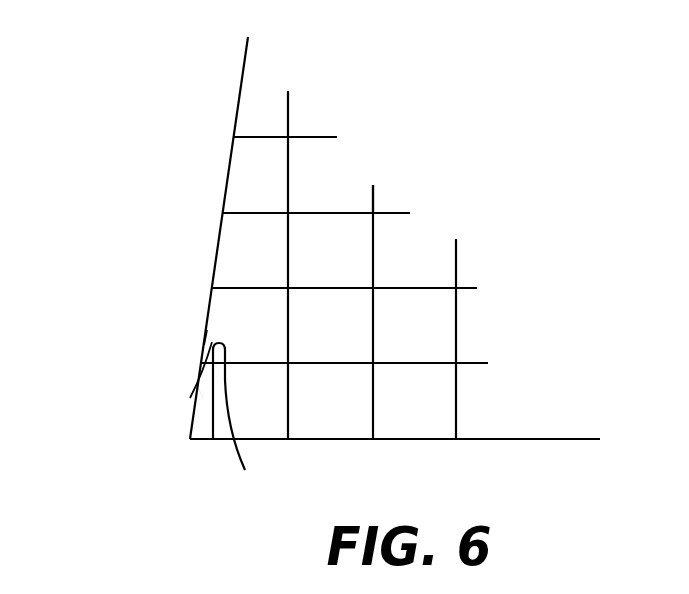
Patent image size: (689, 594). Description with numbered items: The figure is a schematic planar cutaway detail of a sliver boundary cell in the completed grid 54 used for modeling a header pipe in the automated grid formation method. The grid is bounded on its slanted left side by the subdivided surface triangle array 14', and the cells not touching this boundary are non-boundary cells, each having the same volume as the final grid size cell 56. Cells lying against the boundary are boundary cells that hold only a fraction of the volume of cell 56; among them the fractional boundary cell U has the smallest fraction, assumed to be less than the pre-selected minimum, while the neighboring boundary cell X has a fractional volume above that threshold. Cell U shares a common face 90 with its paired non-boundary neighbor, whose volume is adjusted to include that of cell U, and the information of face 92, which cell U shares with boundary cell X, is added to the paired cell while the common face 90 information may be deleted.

The subdivided surface triangle array 14' is at (364, 238).
The completed grid 54 is at (378, 137).
The final grid size cell 56 is at (375, 212).
The common face 90 is at (238, 423).
The face 92 is at (195, 382).
The fractional boundary cell U is at (207, 330).
The boundary cell X is at (203, 398).